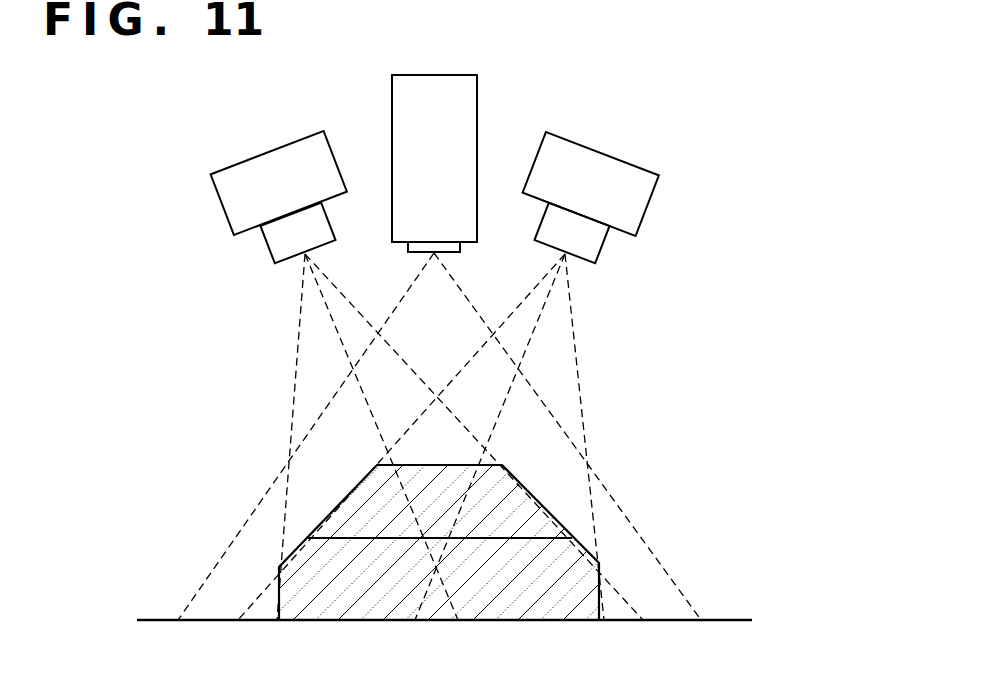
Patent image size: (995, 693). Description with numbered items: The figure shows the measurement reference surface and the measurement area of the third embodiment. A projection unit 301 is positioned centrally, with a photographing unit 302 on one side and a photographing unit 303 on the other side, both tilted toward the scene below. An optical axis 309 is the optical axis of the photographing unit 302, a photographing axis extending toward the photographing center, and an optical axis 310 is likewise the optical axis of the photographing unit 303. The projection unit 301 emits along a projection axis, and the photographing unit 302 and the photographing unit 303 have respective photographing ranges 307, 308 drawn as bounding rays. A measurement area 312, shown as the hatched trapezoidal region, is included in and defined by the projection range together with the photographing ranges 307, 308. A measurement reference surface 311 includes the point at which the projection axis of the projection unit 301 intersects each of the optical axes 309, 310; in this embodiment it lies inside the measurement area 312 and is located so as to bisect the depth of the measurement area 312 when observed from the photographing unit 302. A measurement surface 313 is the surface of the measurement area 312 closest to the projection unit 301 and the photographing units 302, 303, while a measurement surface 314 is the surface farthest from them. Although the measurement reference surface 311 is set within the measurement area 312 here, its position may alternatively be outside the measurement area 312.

The projection unit 301 is at (458, 75).
The photographing unit 302 is at (312, 133).
The photographing unit 303 is at (637, 168).
The photographing range 307 is at (307, 308).
The photographing range 308 is at (557, 303).
The optical axis 309 is at (348, 357).
The optical axis 310 is at (527, 350).
The measurement reference surface 311 is at (344, 540).
The measurement area 312 is at (567, 608).
The measurement surface 313 is at (460, 464).
The measurement surface 314 is at (348, 621).